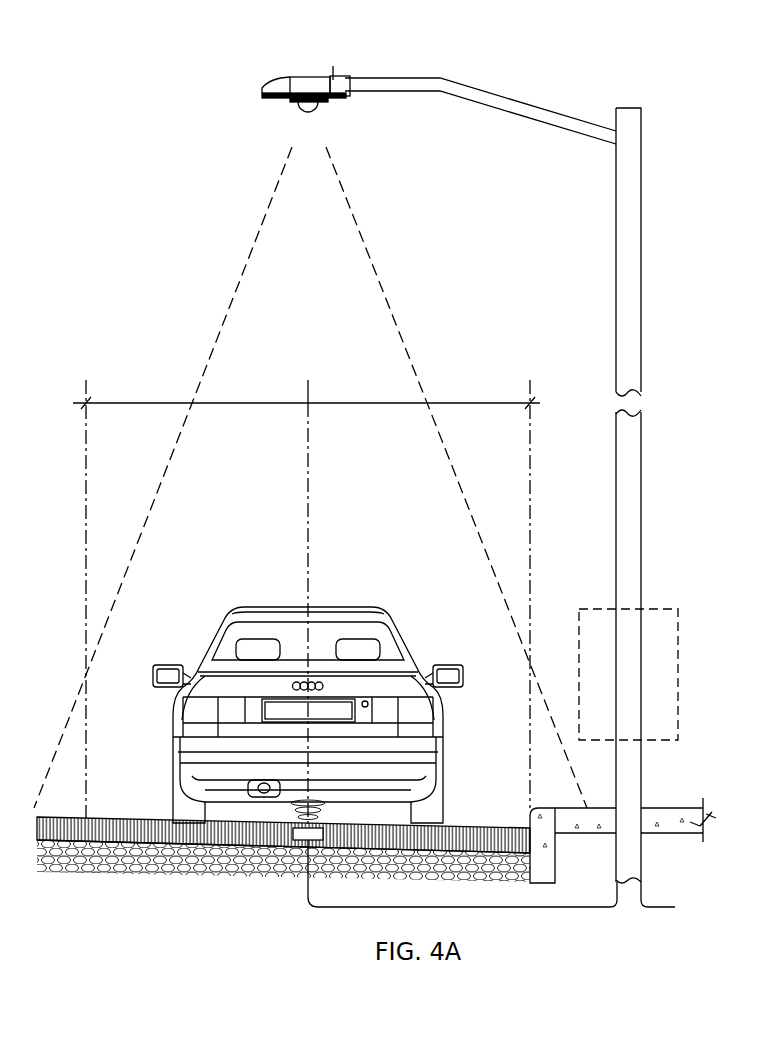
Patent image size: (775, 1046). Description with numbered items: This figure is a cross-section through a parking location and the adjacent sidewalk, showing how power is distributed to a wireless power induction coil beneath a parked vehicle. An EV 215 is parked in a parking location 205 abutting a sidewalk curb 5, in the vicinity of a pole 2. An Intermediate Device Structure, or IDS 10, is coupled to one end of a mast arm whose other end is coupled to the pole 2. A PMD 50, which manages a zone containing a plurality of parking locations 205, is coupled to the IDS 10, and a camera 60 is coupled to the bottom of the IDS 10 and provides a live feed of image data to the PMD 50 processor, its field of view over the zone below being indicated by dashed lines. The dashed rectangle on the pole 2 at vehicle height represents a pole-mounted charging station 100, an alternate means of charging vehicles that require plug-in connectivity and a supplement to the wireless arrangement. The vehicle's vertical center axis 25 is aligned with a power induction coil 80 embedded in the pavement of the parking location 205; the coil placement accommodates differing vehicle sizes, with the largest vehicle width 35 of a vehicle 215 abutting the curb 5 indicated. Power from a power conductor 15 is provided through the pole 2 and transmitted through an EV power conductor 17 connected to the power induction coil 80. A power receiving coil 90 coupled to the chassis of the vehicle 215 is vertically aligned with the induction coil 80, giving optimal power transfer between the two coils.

The pole 2 is at (643, 545).
The sidewalk curb 5 is at (530, 810).
The Intermediate Device Structure (IDS) 10 is at (311, 78).
The power conductor 15 is at (645, 908).
The EV power conductor 17 is at (527, 908).
The vertical center axis 25 is at (313, 510).
The largest vehicle width 35 is at (270, 350).
The PMD 50 is at (296, 78).
The camera 60 is at (302, 109).
The power induction coil 80 is at (298, 842).
The power receiving coil 90 is at (326, 796).
The charging station 100 is at (676, 667).
The parking location 205 is at (118, 838).
The EV 215 is at (255, 626).